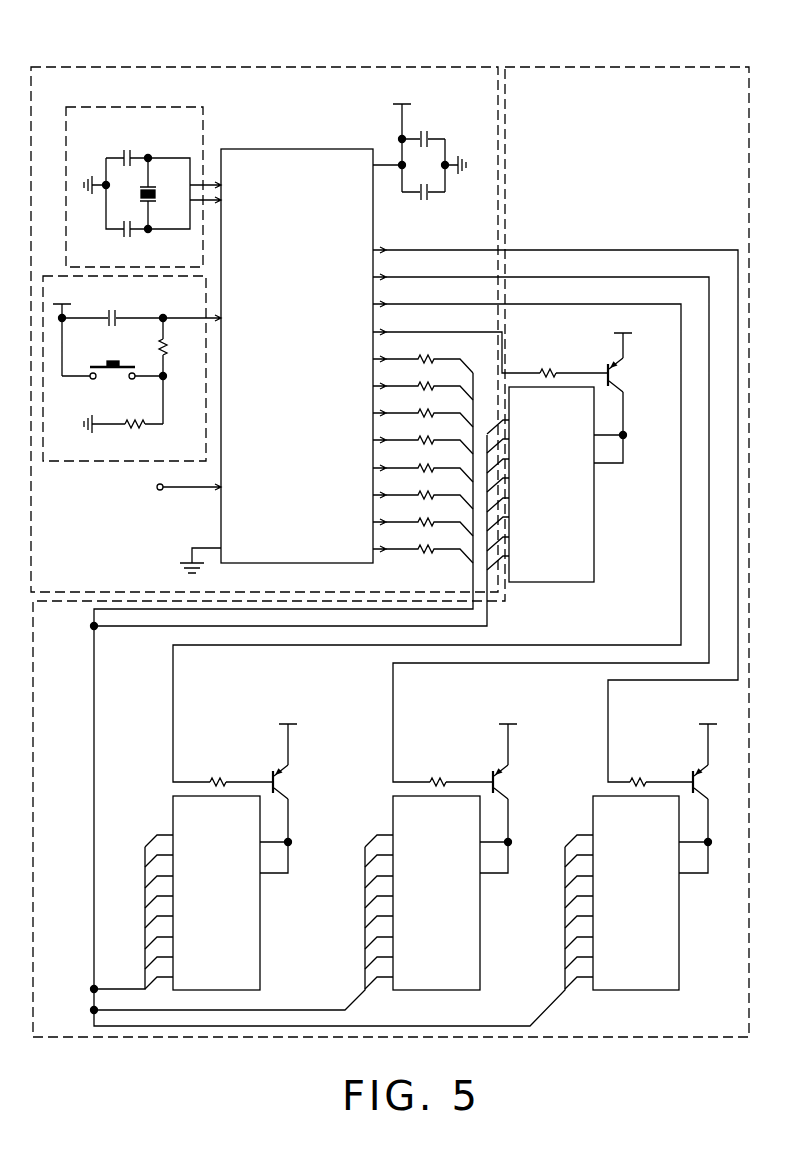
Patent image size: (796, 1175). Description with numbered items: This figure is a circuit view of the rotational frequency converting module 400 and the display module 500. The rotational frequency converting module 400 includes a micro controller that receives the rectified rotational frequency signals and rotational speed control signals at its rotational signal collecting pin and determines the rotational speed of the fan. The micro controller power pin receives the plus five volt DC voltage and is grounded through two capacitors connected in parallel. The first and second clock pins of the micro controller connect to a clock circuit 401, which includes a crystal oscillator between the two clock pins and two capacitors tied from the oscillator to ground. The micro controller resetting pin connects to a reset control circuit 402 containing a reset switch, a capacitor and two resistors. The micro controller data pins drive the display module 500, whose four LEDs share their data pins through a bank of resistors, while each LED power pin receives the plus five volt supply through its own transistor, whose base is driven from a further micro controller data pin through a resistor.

The rotational frequency converting module 400 is at (315, 66).
The clock circuit 401 is at (204, 123).
The reset control circuit 402 is at (115, 463).
The display module 500 is at (538, 1040).